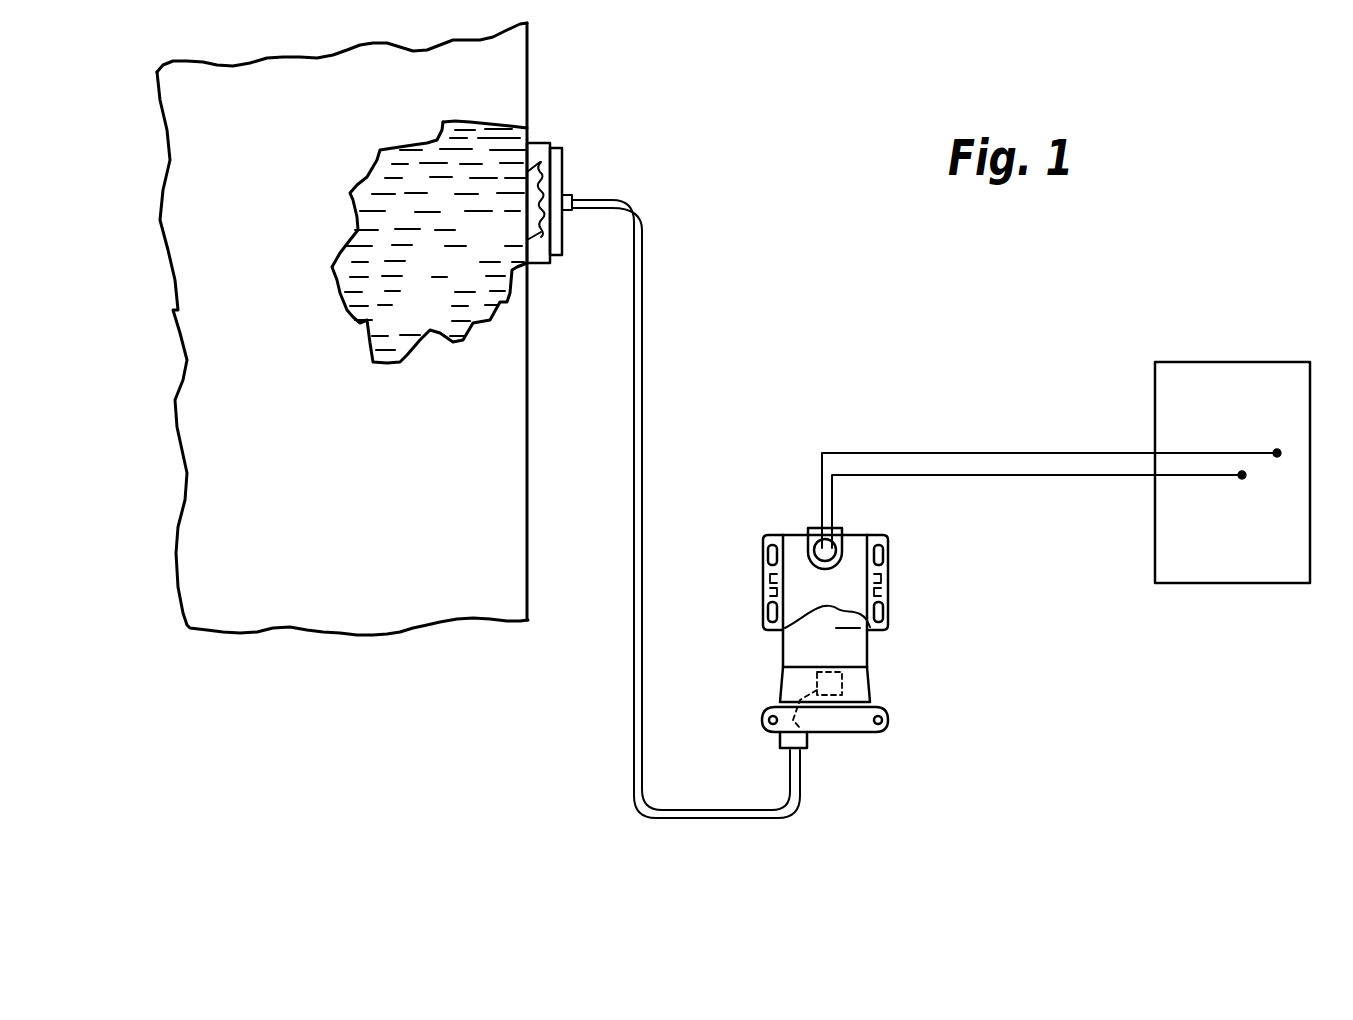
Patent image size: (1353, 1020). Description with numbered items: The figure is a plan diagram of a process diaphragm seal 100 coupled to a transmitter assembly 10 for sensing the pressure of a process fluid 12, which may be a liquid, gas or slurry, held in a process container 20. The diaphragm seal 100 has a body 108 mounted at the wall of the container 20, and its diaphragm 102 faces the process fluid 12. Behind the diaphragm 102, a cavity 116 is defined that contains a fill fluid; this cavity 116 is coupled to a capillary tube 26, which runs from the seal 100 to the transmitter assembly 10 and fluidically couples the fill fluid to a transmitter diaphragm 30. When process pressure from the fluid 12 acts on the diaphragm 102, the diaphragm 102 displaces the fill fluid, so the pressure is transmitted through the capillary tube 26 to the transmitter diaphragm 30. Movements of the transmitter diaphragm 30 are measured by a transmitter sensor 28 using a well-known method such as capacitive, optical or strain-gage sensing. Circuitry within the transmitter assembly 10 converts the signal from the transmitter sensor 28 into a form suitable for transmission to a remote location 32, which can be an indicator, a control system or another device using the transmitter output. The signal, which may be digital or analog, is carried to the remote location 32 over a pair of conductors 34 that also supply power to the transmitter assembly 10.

The transmitter assembly 10 is at (1021, 638).
The process fluid 12 is at (429, 242).
The process container 20 is at (415, 603).
The capillary tube 26 is at (643, 265).
The transmitter sensor 28 is at (843, 680).
The transmitter diaphragm 30 is at (812, 733).
The remote location 32 is at (1205, 362).
The pair of conductors 34 is at (980, 475).
The process diaphragm seal 100 is at (537, 152).
The diaphragm 102 is at (527, 208).
The body 108 is at (548, 143).
The cavity 116 is at (547, 187).